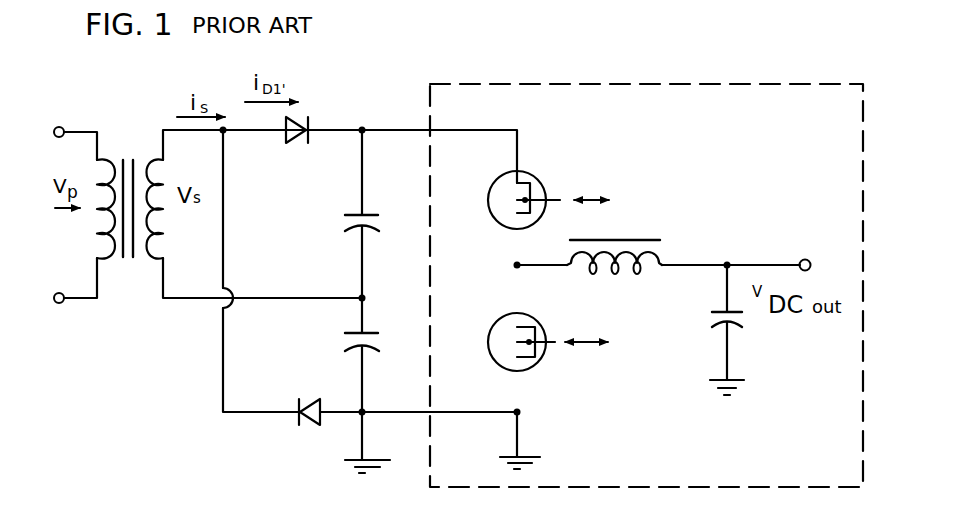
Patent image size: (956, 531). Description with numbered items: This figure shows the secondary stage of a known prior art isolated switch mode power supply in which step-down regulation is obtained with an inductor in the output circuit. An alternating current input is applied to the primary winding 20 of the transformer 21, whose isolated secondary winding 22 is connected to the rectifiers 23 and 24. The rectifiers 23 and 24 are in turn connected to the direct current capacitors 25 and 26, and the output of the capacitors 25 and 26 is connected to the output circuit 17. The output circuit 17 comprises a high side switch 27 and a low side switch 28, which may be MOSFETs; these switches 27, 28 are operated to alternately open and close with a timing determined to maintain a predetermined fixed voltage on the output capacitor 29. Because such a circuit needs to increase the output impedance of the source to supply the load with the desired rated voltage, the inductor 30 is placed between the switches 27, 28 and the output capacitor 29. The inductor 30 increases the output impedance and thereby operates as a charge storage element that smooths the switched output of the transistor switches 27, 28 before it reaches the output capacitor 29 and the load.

The output circuit 17 is at (622, 80).
The primary winding 20 is at (88, 235).
The transformer 21 is at (130, 138).
The secondary winding 22 is at (173, 217).
The rectifier 23 is at (304, 114).
The rectifier 24 is at (312, 432).
The direct current capacitor 25 is at (340, 225).
The direct current capacitor 26 is at (343, 342).
The high side switch 27 is at (545, 177).
The low side switch 28 is at (543, 372).
The output capacitor 29 is at (712, 325).
The inductor 30 is at (632, 233).